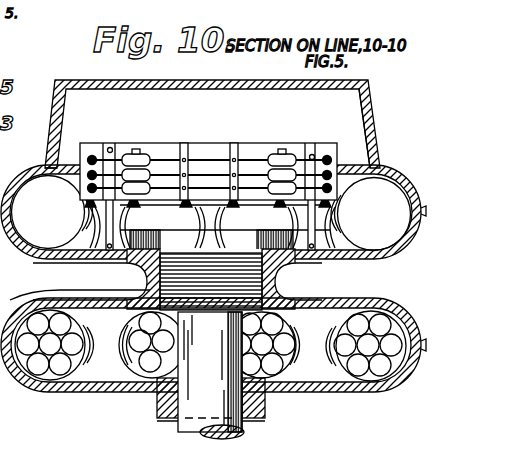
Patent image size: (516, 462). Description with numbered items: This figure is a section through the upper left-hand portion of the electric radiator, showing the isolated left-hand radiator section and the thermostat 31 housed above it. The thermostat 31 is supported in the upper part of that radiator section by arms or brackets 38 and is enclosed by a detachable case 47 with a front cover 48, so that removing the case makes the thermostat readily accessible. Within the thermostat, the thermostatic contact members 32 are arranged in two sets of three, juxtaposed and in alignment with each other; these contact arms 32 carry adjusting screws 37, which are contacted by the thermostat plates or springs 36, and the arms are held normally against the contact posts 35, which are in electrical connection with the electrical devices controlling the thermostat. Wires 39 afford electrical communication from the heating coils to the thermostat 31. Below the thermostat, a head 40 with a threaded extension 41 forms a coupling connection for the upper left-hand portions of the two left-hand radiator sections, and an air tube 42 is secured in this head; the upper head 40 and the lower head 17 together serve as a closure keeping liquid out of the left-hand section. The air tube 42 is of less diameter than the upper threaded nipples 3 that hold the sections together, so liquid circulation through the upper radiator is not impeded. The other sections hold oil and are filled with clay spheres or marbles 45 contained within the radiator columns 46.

The upper threaded nipple 3 is at (254, 414).
The lower head 17 is at (27, 165).
The thermostat 31 is at (232, 150).
The thermostatic contact member 32 is at (98, 158).
The contact post 35 is at (339, 156).
The thermostat plate or spring 36 is at (168, 157).
The adjusting screw 37 is at (125, 156).
The arm or bracket 38 is at (108, 222).
The wire 39 is at (22, 449).
The head 40 is at (241, 248).
The threaded extension 41 is at (276, 283).
The air tube 42 is at (195, 400).
The clay spheres or marbles 45 is at (70, 380).
The radiator column 46 is at (122, 357).
The detachable case 47 is at (372, 161).
The front cover 48 is at (150, 88).